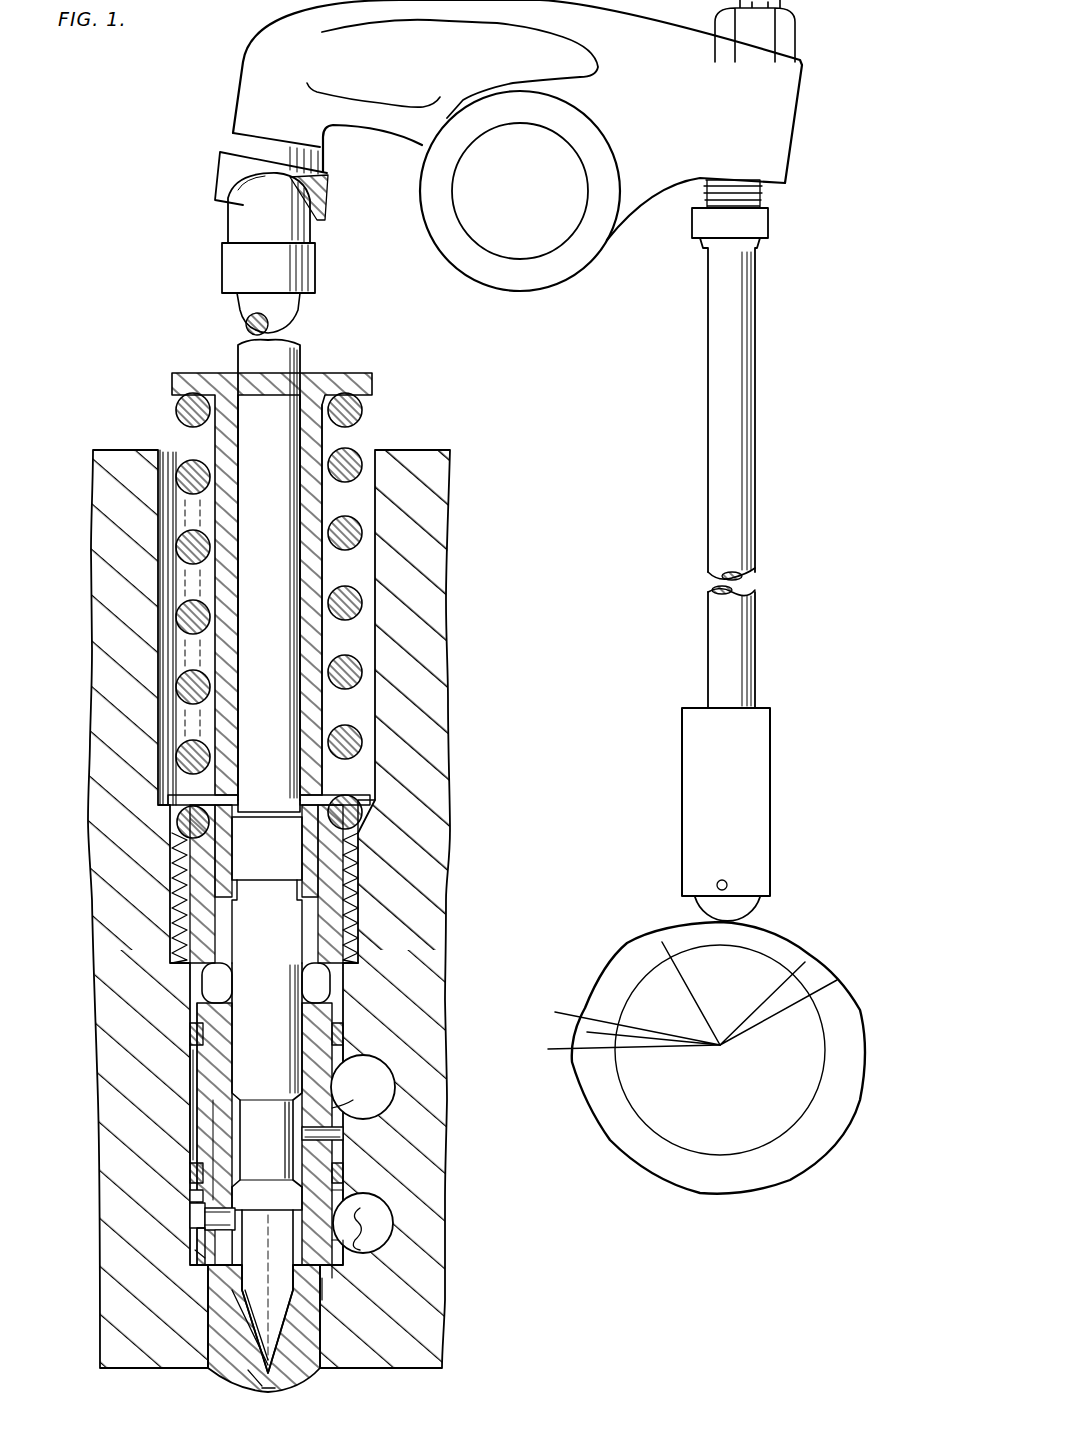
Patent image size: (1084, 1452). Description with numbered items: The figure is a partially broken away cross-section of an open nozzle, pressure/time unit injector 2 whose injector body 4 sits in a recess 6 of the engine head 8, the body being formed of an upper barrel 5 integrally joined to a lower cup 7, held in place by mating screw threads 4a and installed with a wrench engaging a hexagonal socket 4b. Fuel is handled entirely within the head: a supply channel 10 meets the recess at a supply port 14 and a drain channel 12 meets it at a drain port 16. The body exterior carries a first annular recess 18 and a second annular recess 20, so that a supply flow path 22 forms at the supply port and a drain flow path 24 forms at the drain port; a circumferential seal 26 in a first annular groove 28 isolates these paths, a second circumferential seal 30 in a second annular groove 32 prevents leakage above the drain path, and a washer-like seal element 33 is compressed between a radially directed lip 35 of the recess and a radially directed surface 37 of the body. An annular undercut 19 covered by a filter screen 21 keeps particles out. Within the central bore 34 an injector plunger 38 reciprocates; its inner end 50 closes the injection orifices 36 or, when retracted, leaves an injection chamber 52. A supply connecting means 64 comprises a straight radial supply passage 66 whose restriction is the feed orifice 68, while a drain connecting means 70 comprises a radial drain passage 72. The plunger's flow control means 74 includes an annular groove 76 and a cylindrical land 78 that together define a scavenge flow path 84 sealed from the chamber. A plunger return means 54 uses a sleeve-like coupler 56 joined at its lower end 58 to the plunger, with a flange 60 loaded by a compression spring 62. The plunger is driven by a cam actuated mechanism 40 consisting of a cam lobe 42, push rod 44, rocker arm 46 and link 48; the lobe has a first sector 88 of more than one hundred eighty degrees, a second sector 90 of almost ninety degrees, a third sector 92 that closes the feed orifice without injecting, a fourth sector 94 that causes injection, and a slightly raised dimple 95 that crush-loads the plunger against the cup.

The unit injector 2 is at (160, 437).
The injector body 4 is at (342, 1015).
The mating screw threads 4a is at (350, 868).
The hexagonal socket 4b is at (195, 925).
The barrel 5 is at (345, 1045).
The recess 6 is at (372, 725).
The cup 7 is at (305, 1332).
The head 8 is at (448, 563).
The supply channel 10 is at (375, 1235).
The drain channel 12 is at (388, 1100).
The supply port 14 is at (345, 1250).
The drain port 16 is at (345, 1095).
The first annular recess 18 is at (190, 1196).
The annular undercut 19 is at (344, 1173).
The second annular recess 20 is at (190, 1118).
The filter screen 21 is at (190, 1212).
The supply flow path 22 is at (197, 1260).
The drain flow path 24 is at (190, 1075).
The circumferential seal 26 is at (190, 1170).
The first annular groove 28 is at (210, 1170).
The circumferential seal 30 is at (190, 1035).
The second annular groove 32 is at (215, 1020).
The washer-like seal element 33 is at (328, 1272).
The central bore 34 is at (305, 980).
The radially directed lip 35 is at (325, 1290).
The injection orifices 36 is at (278, 1388).
The radially directed surface 37 is at (300, 1257).
The injector plunger 38 is at (325, 1000).
The cam actuated mechanism 40 is at (655, 25).
The cam lobe 42 is at (862, 1083).
The push rod 44 is at (757, 528).
The rocker arm 46 is at (290, 32).
The link 48 is at (243, 355).
The inner end 50 is at (255, 1305).
The injection chamber 52 is at (248, 1380).
The plunger return means 54 is at (392, 425).
The sleeve-like coupler 56 is at (325, 655).
The lower end 58 is at (302, 870).
The flange 60 is at (350, 375).
The compression spring 62 is at (178, 405).
The supply connecting means 64 is at (203, 1245).
The supply passage 66 is at (205, 1222).
The feed orifice 68 is at (222, 1262).
The drain connecting means 70 is at (345, 1133).
The drain passage 72 is at (335, 1140).
The flow control means 74 is at (263, 1118).
The annular groove 76 is at (240, 1150).
The cylindrical land 78 is at (267, 1196).
The scavenge flow path 84 is at (335, 1108).
The first sector 88 is at (788, 1140).
The second sector 90 is at (820, 1000).
The third sector 92 is at (697, 955).
The fourth sector 94 is at (615, 1008).
The dimple 95 is at (613, 1050).